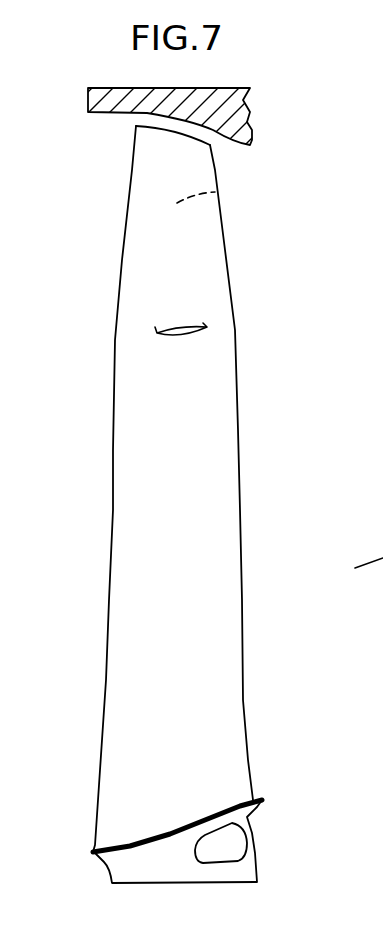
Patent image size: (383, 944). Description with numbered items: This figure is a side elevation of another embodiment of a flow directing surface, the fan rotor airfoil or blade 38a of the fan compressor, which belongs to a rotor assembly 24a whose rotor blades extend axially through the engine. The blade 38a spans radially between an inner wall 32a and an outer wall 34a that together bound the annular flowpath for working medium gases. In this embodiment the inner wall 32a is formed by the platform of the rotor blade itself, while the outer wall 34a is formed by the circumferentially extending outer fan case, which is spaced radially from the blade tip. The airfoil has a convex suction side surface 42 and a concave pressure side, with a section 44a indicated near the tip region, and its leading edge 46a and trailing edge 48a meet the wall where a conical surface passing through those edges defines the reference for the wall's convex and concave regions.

The rotor assembly 24a is at (217, 504).
The inner wall 32a is at (220, 810).
The outer wall 34a is at (233, 142).
The fan rotor airfoil (blade) 38a is at (182, 489).
The suction side surface 42 is at (215, 192).
The airfoil section 44a is at (189, 416).
The leading edge 46a is at (113, 487).
The trailing edge 48a is at (240, 562).